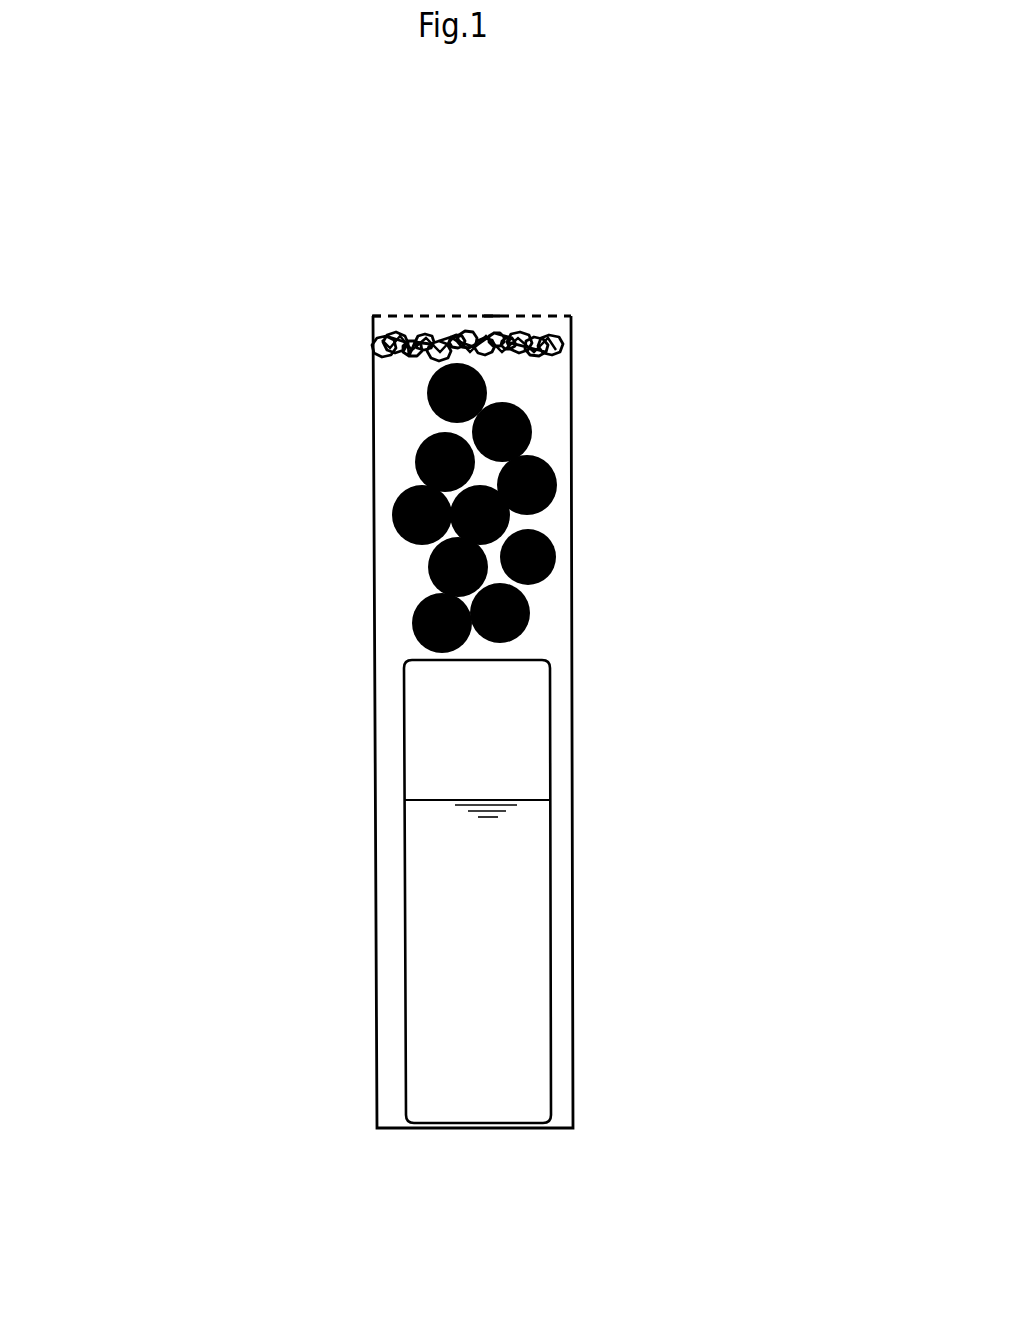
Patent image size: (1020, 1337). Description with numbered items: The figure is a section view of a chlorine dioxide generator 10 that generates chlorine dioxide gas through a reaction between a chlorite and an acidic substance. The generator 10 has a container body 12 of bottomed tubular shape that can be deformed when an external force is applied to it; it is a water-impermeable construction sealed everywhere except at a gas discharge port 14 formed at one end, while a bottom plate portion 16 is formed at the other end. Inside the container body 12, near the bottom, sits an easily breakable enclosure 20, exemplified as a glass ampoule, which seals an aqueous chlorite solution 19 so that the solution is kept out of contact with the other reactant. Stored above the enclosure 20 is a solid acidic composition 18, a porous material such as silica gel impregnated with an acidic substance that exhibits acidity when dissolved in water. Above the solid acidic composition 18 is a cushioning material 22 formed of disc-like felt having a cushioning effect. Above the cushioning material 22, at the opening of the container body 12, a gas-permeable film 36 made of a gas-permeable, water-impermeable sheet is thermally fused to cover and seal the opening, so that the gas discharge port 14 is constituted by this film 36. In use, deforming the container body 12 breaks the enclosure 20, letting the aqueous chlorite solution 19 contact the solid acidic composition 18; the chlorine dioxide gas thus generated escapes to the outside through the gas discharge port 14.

The chlorine dioxide generator 10 is at (387, 111).
The container body 12 is at (373, 455).
The gas discharge port 14 is at (457, 315).
The bottom plate portion 16 is at (392, 1127).
The solid acidic composition 18 is at (540, 460).
The aqueous chlorite solution 19 is at (502, 892).
The enclosure 20 is at (403, 768).
The cushioning material 22 is at (410, 322).
The gas-permeable film 36 is at (488, 318).